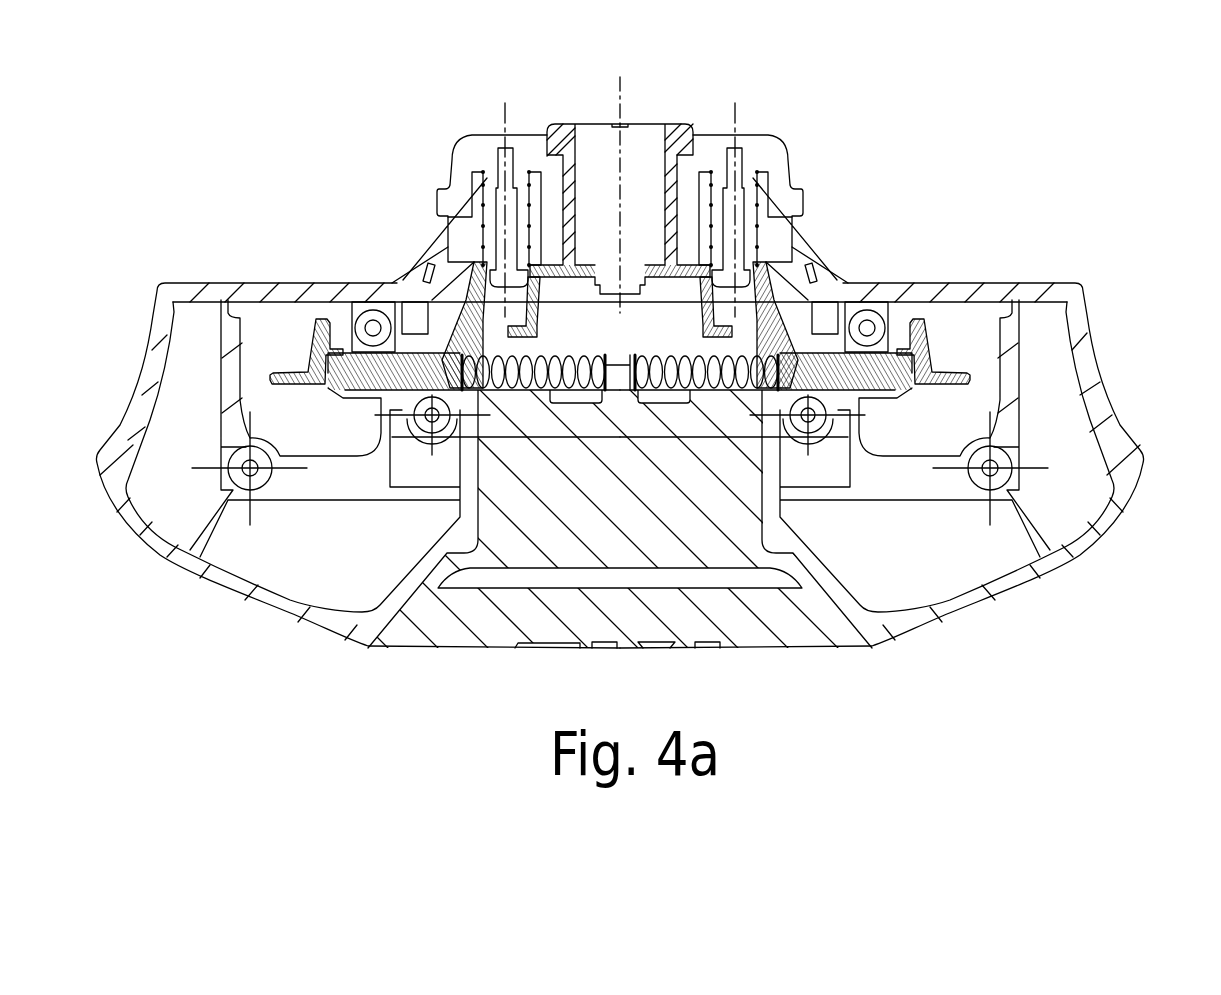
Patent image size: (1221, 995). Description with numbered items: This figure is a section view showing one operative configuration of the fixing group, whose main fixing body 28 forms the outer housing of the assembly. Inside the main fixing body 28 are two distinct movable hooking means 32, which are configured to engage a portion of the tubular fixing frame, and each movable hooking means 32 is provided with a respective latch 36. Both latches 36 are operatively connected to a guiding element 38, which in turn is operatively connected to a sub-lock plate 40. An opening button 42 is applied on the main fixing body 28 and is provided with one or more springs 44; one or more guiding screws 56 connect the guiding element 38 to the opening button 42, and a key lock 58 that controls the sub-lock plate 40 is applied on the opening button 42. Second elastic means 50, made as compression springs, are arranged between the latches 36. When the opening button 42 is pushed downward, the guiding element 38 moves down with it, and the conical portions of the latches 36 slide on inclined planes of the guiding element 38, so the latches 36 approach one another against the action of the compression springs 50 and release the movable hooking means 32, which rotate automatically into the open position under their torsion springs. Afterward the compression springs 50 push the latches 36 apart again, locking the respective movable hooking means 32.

The main fixing body 28 is at (1108, 375).
The movable hooking means 32 is at (305, 331).
The latch 36 is at (377, 393).
The guiding element 38 is at (462, 317).
The sub-lock plate 40 is at (810, 253).
The opening button 42 is at (750, 140).
The spring 44 is at (480, 230).
The second elastic means 50 is at (577, 393).
The guiding screw 56 is at (512, 227).
The key lock 58 is at (588, 138).